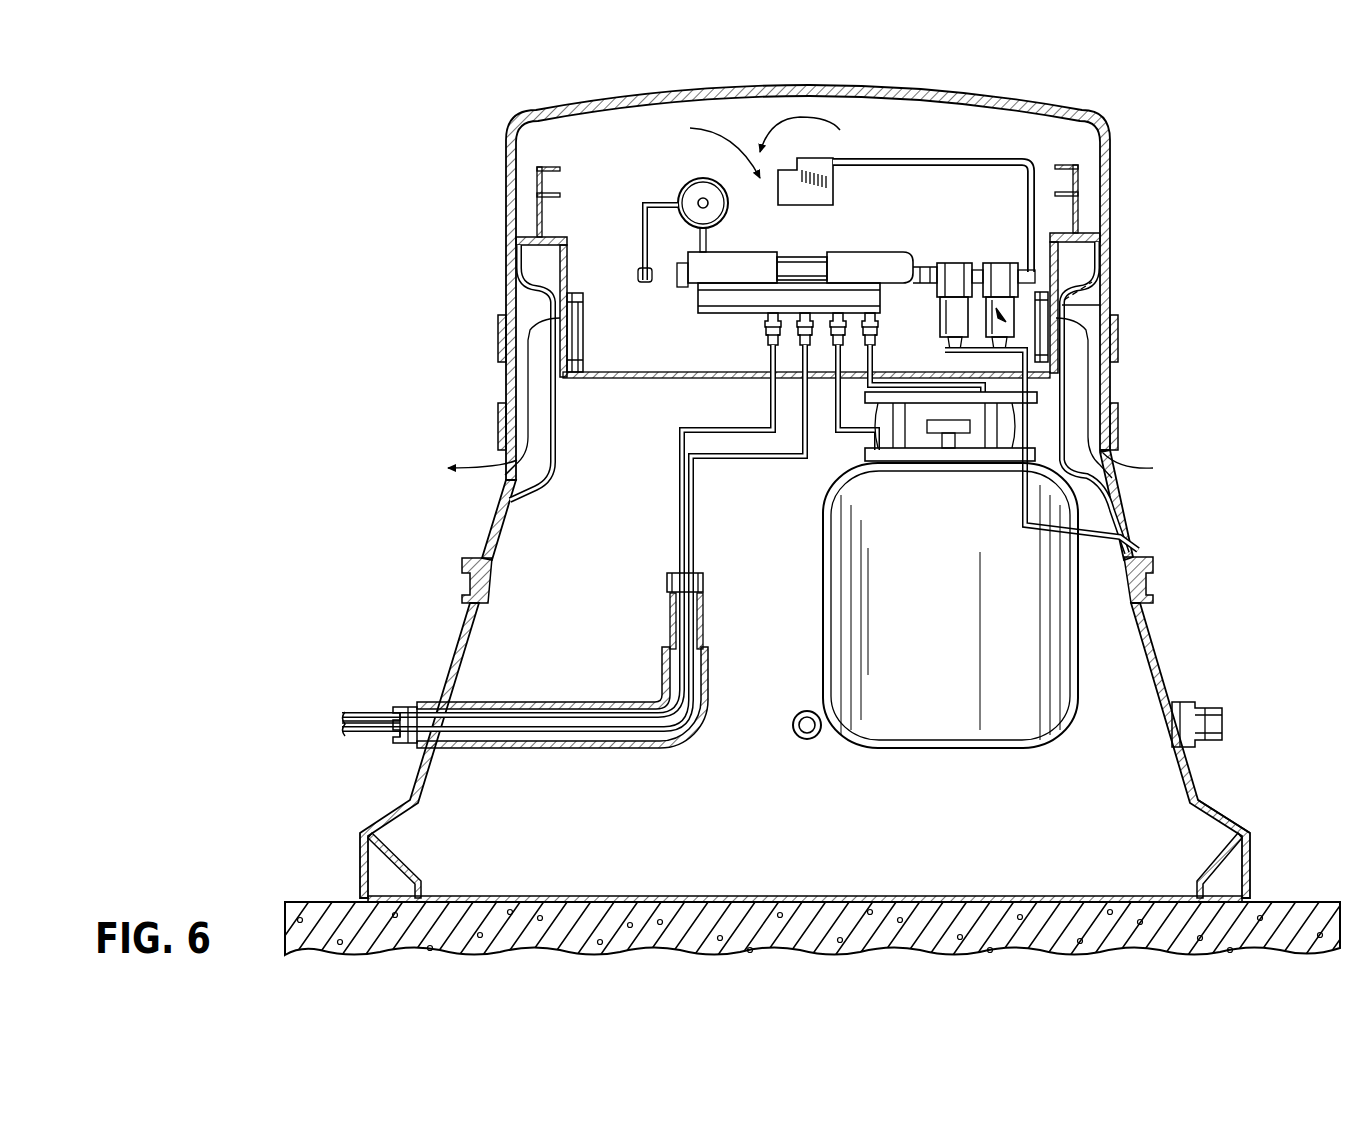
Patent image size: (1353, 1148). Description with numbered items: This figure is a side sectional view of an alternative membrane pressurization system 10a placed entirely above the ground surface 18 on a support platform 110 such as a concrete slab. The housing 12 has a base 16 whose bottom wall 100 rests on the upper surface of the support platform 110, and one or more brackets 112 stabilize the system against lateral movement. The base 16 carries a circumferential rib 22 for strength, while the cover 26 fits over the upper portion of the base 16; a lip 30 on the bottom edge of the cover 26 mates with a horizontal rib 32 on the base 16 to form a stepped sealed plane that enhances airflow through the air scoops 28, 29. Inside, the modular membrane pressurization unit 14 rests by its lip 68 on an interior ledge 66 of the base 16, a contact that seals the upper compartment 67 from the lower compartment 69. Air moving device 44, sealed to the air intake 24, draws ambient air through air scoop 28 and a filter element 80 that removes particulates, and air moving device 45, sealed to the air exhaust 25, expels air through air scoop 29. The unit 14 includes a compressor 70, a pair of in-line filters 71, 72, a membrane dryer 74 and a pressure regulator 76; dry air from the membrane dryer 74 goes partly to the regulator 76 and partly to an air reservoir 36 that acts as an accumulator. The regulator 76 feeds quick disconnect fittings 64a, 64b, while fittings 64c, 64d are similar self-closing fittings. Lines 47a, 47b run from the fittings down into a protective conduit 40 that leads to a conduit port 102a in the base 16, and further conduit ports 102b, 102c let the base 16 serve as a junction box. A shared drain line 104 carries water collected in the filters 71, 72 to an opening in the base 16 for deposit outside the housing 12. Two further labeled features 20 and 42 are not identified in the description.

The membrane pressurization system 10a is at (312, 150).
The housing 12 is at (1150, 515).
The modular membrane pressurization unit 14 is at (638, 166).
The base 16 is at (1168, 661).
The ground surface 18 is at (1254, 550).
The base flange 20 is at (1210, 809).
The circumferential rib 22 is at (1157, 580).
The air intake 24 is at (1100, 305).
The air exhaust 25 is at (556, 307).
The cover 26 is at (1094, 122).
The air scoop 28 is at (1095, 383).
The air scoop 29 is at (526, 345).
The lip 30 is at (517, 458).
The horizontal rib 32 is at (503, 415).
The air reservoir 36 is at (936, 588).
The protective conduit 40 is at (664, 681).
The clip 42 is at (540, 178).
The air moving device 44 is at (1040, 290).
The air moving device 45 is at (610, 320).
The line 47a is at (680, 520).
The line 47b is at (694, 548).
The fitting 64a is at (768, 335).
The fitting 64b is at (800, 345).
The fitting 64c is at (833, 345).
The fitting 64d is at (875, 340).
The interior ledge 66 is at (1095, 236).
The upper compartment 67 is at (932, 217).
The lip 68 is at (553, 237).
The lower compartment 69 is at (577, 585).
The compressor 70 is at (817, 197).
The in-line filter 71 is at (948, 263).
The in-line filter 72 is at (990, 263).
The membrane dryer 74 is at (876, 252).
The pressure regulator 76 is at (697, 180).
The filter element 80 is at (1098, 286).
The bottom wall 100 is at (630, 896).
The conduit port 102a is at (418, 706).
The conduit port 102b is at (805, 711).
The conduit port 102c is at (1205, 704).
The shared drain line 104 is at (1090, 548).
The support platform 110 is at (305, 902).
The bracket 112 is at (360, 852).